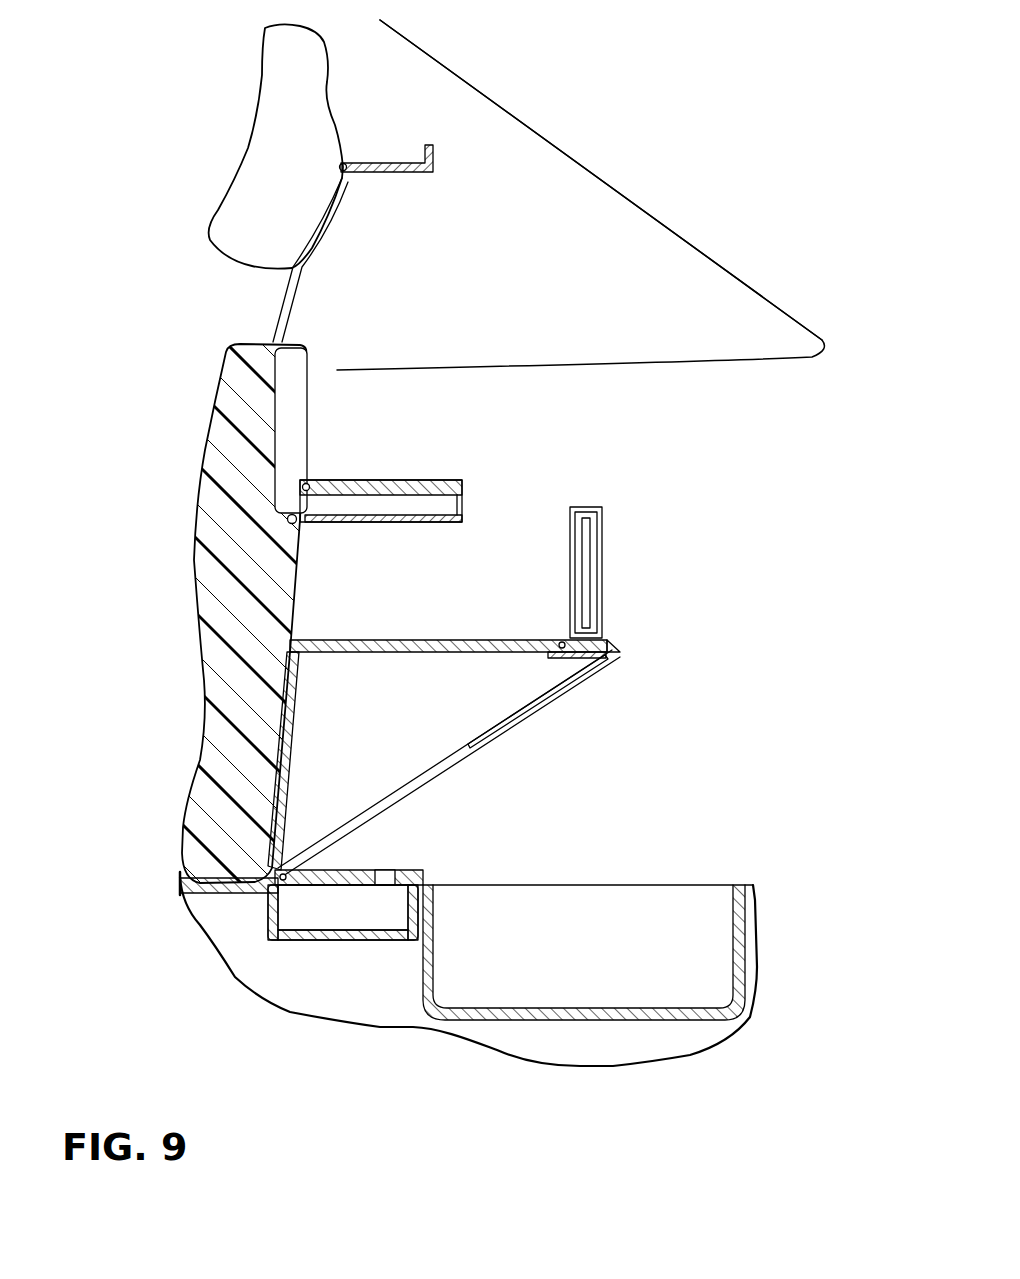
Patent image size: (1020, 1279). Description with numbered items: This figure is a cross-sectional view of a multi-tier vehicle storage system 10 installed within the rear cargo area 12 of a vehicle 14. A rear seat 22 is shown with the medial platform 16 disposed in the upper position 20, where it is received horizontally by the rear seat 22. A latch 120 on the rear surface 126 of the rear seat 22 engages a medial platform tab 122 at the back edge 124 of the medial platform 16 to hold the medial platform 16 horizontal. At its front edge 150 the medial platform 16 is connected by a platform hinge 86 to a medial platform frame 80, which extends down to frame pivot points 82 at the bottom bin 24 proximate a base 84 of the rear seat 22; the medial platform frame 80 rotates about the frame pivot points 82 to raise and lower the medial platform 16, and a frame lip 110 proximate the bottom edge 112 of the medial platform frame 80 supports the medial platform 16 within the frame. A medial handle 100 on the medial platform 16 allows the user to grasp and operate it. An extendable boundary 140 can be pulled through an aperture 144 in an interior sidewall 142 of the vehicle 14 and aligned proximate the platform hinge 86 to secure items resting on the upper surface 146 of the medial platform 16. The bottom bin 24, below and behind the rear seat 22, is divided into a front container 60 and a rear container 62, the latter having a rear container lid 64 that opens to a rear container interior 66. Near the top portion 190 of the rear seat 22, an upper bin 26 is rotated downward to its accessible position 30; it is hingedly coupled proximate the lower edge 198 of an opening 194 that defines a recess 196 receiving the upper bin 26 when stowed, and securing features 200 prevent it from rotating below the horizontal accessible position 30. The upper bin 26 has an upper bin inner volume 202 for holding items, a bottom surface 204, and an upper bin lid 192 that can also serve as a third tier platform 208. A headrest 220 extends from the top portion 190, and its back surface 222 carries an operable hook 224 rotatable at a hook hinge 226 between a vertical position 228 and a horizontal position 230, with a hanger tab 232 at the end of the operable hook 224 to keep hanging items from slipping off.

The multi-tier vehicle storage system 10 is at (700, 168).
The rear cargo area 12 is at (818, 627).
The vehicle 14 is at (500, 95).
The medial platform 16 is at (433, 636).
The upper position 20 is at (415, 709).
The rear seat 22 is at (193, 650).
The bottom bin 24 is at (517, 955).
The upper bin 26 is at (457, 467).
The accessible position 30 is at (327, 470).
The front container 60 is at (740, 950).
The rear container 62 is at (312, 951).
The rear container lid 64 is at (360, 868).
The rear container interior 66 is at (316, 921).
The medial platform frame 80 is at (449, 763).
The frame pivot points 82 is at (228, 903).
The base 84 is at (197, 927).
The platform hinge 86 is at (614, 641).
The medial handle 100 is at (562, 640).
The frame lip 110 is at (575, 682).
The bottom edge 112 is at (528, 720).
The latch 120 is at (302, 656).
The medial platform tab 122 is at (292, 655).
The back edge 124 is at (300, 636).
The rear surface 126 is at (300, 585).
The extendable boundary 140 is at (592, 572).
The interior sidewall 142 is at (655, 435).
The aperture 144 is at (584, 506).
The upper surface 146 is at (482, 636).
The front edge 150 is at (606, 636).
The top portion 190 is at (238, 401).
The upper bin lid 192 is at (462, 484).
The opening 194 is at (309, 352).
The recess 196 is at (285, 433).
The lower edge 198 is at (302, 522).
The securing features 200 is at (283, 522).
The upper bin inner volume 202 is at (358, 498).
The bottom surface 204 is at (440, 518).
The third tier platform 208 is at (335, 478).
The headrest 220 is at (331, 183).
The back surface 222 is at (330, 68).
The operable hook 224 is at (395, 163).
The hook hinge 226 is at (347, 173).
The vertical position 228 is at (350, 232).
The horizontal position 230 is at (438, 161).
The hanger tab 232 is at (430, 152).